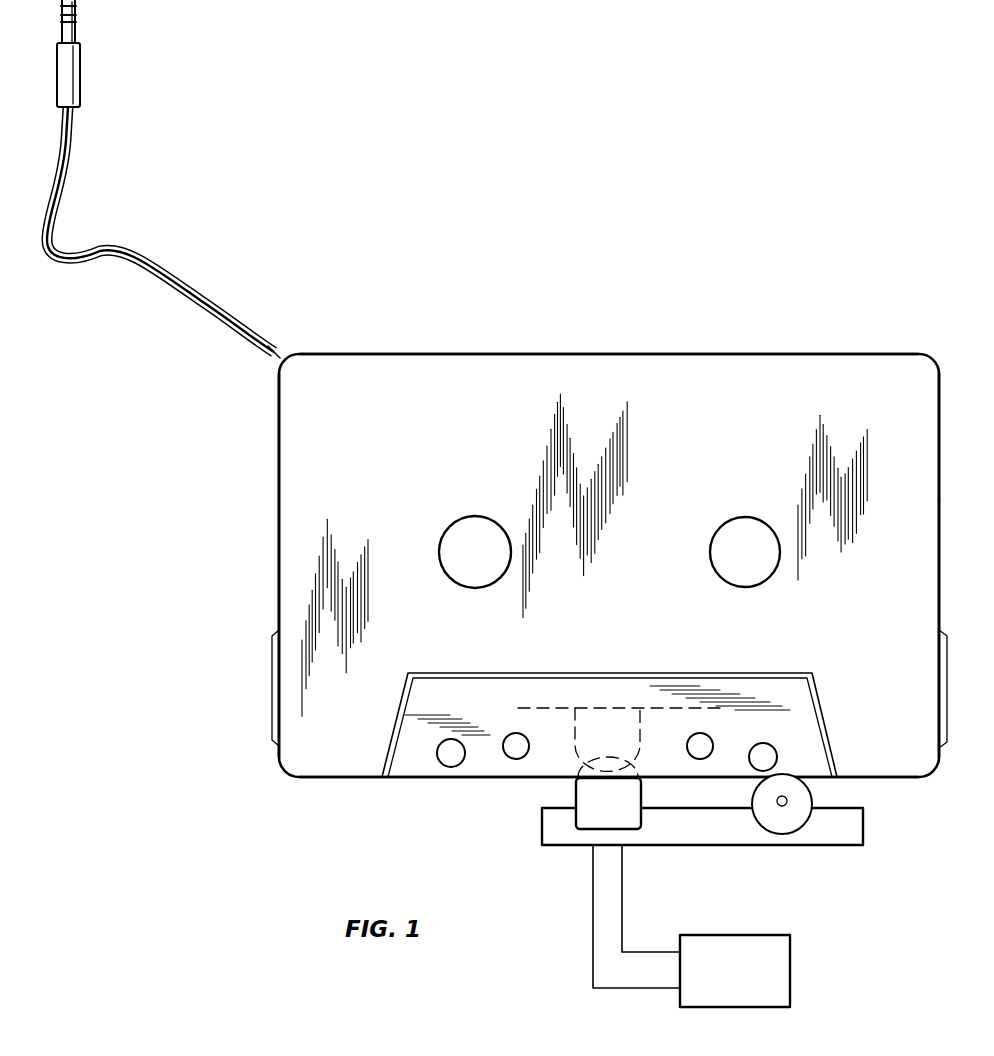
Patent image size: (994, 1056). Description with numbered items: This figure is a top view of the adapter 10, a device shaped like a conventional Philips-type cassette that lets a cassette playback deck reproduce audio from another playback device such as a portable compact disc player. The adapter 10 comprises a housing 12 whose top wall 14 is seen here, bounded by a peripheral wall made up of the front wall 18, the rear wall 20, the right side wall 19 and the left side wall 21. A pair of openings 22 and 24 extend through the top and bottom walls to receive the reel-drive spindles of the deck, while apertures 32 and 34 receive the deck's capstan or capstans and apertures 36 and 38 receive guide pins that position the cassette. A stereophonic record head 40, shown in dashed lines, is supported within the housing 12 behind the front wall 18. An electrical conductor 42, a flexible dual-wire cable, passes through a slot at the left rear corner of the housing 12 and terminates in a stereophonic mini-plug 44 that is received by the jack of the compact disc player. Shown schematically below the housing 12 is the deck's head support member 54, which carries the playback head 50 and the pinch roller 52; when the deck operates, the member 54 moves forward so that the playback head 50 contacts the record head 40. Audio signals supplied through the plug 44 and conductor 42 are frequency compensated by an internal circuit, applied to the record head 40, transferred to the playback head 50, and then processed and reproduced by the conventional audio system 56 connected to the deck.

The adapter 10 is at (262, 492).
The housing 12 is at (898, 504).
The top wall 14 is at (931, 466).
The front wall 18 is at (903, 781).
The right side wall 19 is at (937, 581).
The rear wall 20 is at (711, 355).
The left side wall 21 is at (279, 557).
The opening 22 is at (468, 517).
The opening 24 is at (738, 518).
The aperture 32 is at (448, 740).
The aperture 34 is at (772, 749).
The aperture 36 is at (510, 736).
The aperture 38 is at (703, 738).
The record head 40 is at (578, 731).
The electrical conductor 42 is at (232, 297).
The plug 44 is at (78, 64).
The playback head 50 is at (575, 793).
The pinch roller 52 is at (814, 796).
The member 54 is at (841, 847).
The audio system 56 is at (792, 964).